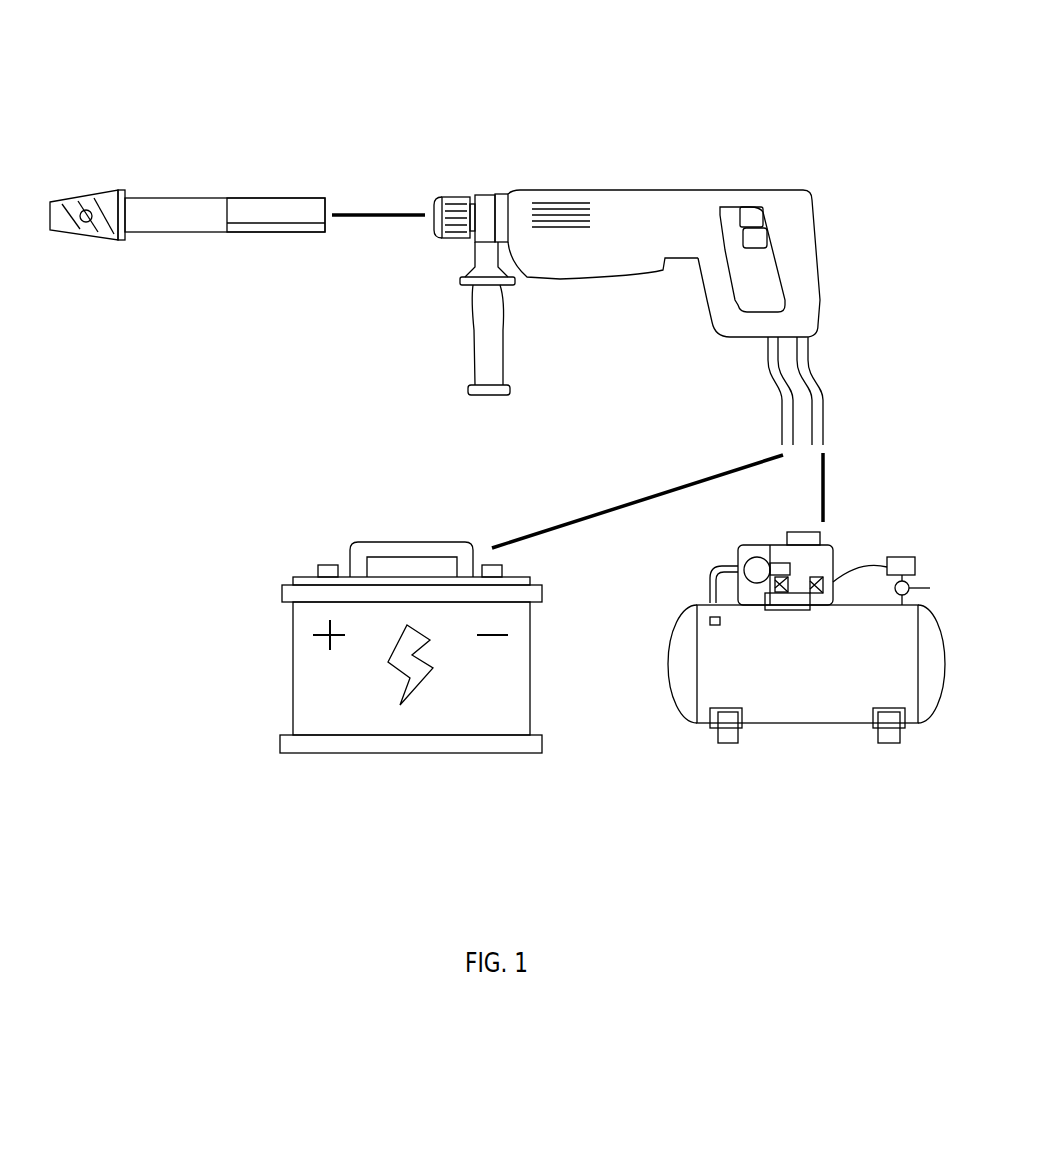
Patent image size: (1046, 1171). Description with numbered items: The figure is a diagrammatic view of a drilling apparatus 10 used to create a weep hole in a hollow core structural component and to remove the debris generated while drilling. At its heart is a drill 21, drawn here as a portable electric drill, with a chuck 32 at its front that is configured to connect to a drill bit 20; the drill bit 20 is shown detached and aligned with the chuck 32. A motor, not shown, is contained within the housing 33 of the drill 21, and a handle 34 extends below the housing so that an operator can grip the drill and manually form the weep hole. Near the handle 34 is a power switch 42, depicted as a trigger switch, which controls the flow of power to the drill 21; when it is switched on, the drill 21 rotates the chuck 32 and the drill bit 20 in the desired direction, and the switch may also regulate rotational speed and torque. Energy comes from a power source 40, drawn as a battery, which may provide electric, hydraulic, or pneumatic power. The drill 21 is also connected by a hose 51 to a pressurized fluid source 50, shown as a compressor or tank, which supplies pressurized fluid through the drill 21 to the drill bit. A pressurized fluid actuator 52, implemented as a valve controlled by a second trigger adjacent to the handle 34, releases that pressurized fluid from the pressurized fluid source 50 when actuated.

The drilling apparatus 10 is at (249, 78).
The drill bit 20 is at (177, 198).
The drill 21 is at (682, 188).
The chuck 32 is at (455, 193).
The housing 33 is at (567, 193).
The handle 34 is at (808, 285).
The power switch 42 is at (752, 218).
The pressurized fluid actuator 52 is at (752, 240).
The hose 51 is at (825, 413).
The power source 40 is at (293, 685).
The pressurized fluid source 50 is at (800, 723).